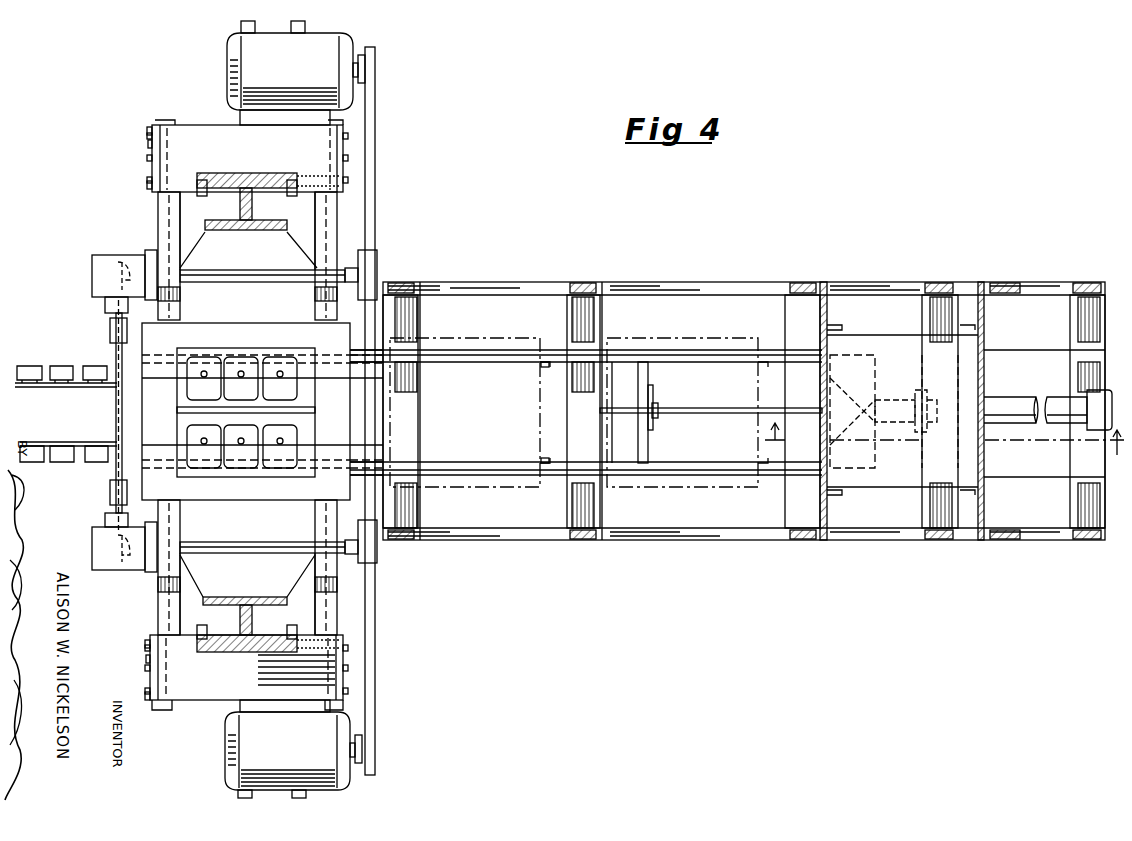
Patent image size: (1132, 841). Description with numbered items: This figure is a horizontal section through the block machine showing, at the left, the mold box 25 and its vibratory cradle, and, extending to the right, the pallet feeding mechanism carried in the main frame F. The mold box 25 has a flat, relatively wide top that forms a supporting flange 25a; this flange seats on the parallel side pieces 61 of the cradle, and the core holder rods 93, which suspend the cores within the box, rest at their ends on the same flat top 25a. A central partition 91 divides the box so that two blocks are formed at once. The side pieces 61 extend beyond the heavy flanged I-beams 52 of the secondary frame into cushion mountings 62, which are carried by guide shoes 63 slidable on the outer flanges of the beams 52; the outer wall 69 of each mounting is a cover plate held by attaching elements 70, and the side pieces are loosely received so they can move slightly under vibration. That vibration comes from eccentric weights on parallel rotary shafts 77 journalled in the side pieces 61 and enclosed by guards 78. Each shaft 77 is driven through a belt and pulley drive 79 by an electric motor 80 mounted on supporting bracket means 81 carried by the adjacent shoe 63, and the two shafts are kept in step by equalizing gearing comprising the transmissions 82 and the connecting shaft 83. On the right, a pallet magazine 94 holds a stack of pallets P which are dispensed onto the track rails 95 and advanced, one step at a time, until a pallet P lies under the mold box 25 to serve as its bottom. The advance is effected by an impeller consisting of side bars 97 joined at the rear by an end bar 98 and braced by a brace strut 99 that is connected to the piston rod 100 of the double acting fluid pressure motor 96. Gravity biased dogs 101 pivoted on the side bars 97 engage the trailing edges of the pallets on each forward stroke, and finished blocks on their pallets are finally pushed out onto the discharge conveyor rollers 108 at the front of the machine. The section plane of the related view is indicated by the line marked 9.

The section line 9- 9 is at (943, 449).
The mold box 25 is at (226, 326).
The supporting flange 25a is at (340, 426).
The I-beams 52 is at (242, 228).
The side pieces 61 is at (335, 206).
The cushion mountings 62 is at (211, 150).
The guide shoes 63 is at (262, 175).
The outer wall 69 is at (148, 170).
The attaching elements 70 is at (148, 134).
The rotary shafts 77 is at (272, 280).
The guards 78 is at (178, 238).
The belt and pulley drive 79 is at (376, 210).
The electric motor 80 is at (322, 40).
The supporting bracket means 81 is at (241, 24).
The transmissions 82 is at (104, 258).
The shaft 83 is at (116, 398).
The central partition 91 is at (177, 410).
The core holder rods 93 is at (345, 378).
The pallet magazine 94 is at (898, 346).
The rails 95 is at (548, 346).
The fluid pressure motor 96 is at (1004, 410).
The side bars 97 is at (472, 362).
The end bar 98 is at (875, 392).
The brace strut 99 is at (650, 402).
The piston rod 100 is at (722, 416).
The dog 101 is at (542, 372).
The discharge conveyor rollers 108 is at (66, 364).
The main frame F is at (762, 280).
The pallet P is at (476, 338).